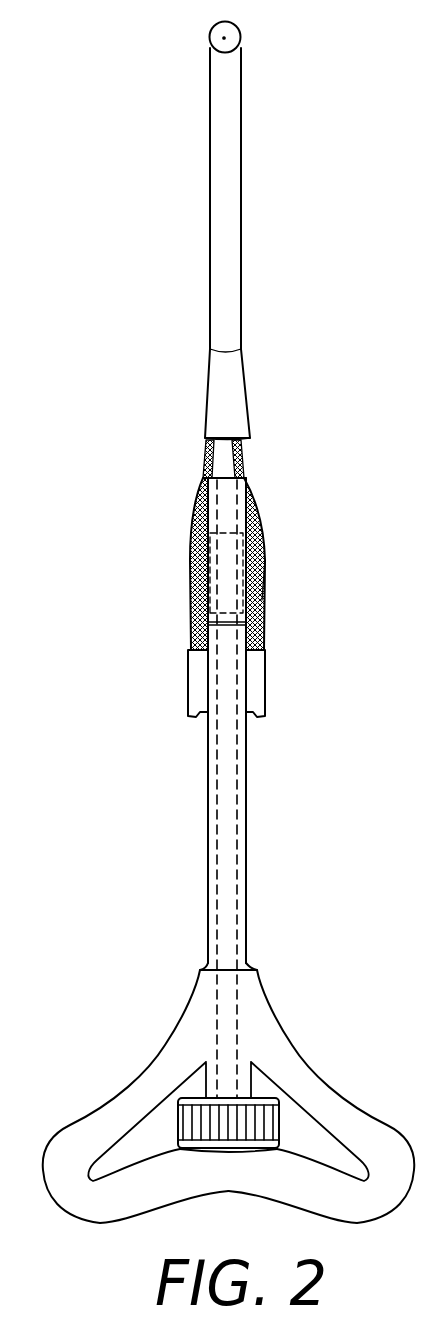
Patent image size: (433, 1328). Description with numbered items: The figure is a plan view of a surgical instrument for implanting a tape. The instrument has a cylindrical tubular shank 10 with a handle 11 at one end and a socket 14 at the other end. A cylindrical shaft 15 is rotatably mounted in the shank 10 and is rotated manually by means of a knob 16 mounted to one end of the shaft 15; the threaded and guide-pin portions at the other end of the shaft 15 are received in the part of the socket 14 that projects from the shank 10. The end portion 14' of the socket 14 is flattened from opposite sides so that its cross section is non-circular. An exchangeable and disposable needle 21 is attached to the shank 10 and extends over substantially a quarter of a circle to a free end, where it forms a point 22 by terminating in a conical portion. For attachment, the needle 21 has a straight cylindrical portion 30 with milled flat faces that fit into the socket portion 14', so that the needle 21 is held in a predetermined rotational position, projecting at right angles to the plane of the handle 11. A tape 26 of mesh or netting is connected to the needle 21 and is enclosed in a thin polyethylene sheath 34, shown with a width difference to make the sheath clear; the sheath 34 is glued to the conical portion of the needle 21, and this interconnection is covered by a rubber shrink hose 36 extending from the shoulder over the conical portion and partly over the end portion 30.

The tubular shank 10 is at (247, 790).
The handle 11 is at (292, 1033).
The socket 14 is at (260, 564).
The end portion of socket 14' is at (272, 548).
The cylindrical shaft 15 is at (232, 878).
The knob 16 is at (280, 1117).
The needle 21 is at (232, 221).
The point 22 is at (241, 41).
The tape 26 is at (262, 621).
The straight portion 30 is at (228, 465).
The polyethylene sheath 34 is at (257, 690).
The rubber shrink hose 36 is at (233, 390).